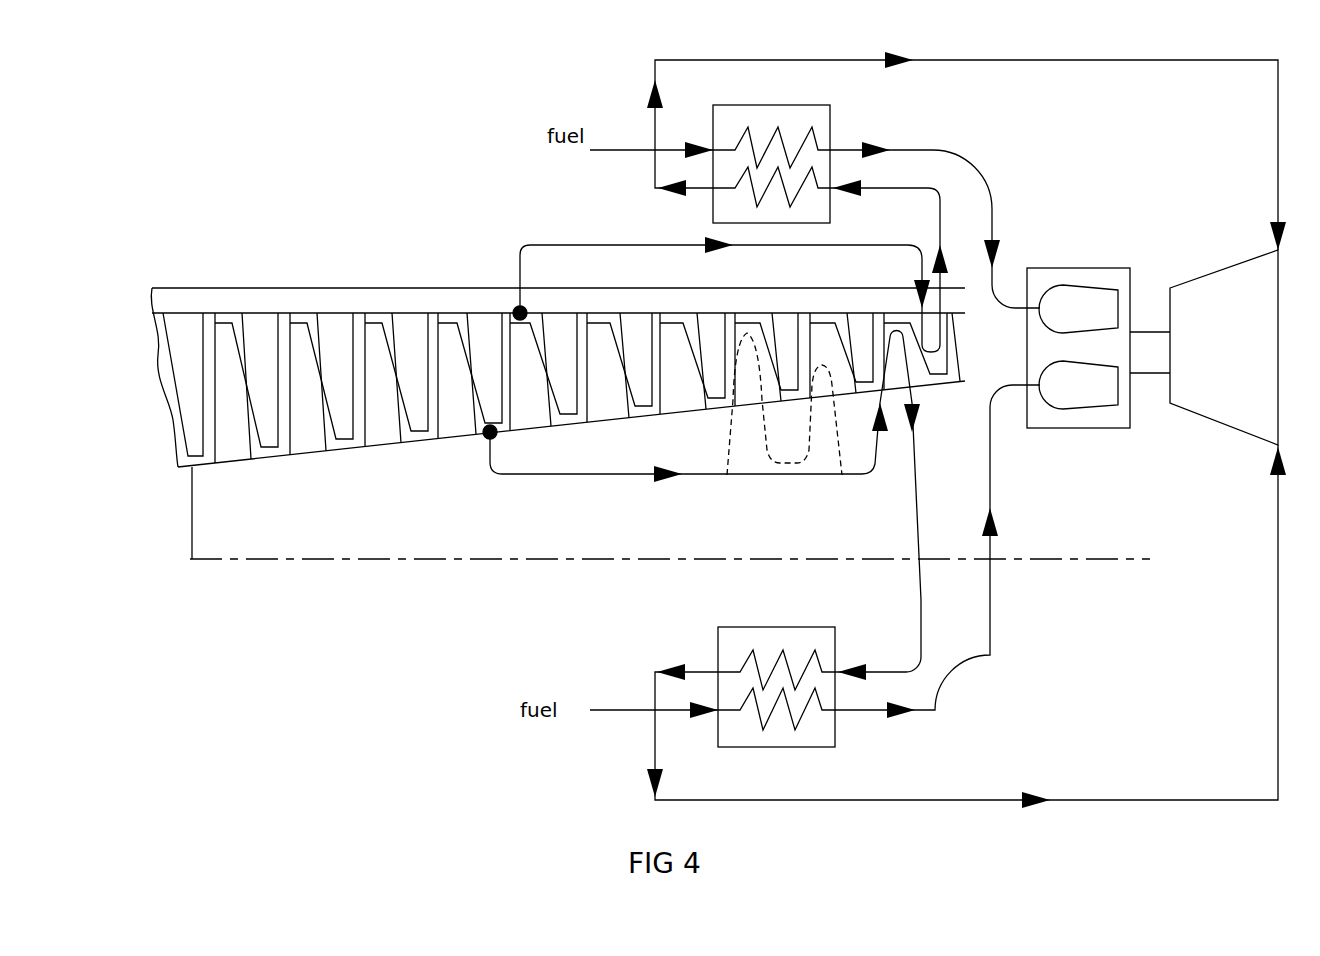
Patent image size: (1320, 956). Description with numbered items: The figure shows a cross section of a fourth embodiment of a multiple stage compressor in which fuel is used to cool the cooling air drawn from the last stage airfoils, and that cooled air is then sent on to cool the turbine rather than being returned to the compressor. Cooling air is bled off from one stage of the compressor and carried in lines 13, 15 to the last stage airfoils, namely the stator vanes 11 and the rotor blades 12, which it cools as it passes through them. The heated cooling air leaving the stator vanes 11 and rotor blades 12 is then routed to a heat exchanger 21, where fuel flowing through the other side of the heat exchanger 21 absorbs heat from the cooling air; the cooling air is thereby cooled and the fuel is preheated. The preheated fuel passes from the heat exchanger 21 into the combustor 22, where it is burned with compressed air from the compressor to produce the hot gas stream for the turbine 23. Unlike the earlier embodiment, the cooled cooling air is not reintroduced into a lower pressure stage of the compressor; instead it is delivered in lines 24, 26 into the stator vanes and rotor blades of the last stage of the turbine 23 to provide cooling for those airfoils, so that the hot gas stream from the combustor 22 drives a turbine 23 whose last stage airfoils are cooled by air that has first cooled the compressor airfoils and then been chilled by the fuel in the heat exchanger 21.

The stator vane 11 is at (930, 363).
The rotor blade 12 is at (893, 367).
The cooling air line 13 is at (571, 243).
The cooling air line 15 is at (597, 478).
The heat exchanger 21 is at (762, 122).
The combustor 22 is at (1081, 308).
The turbine 23 is at (1257, 280).
The cooled cooling air line 24 is at (927, 55).
The cooled cooling air line 26 is at (1000, 797).